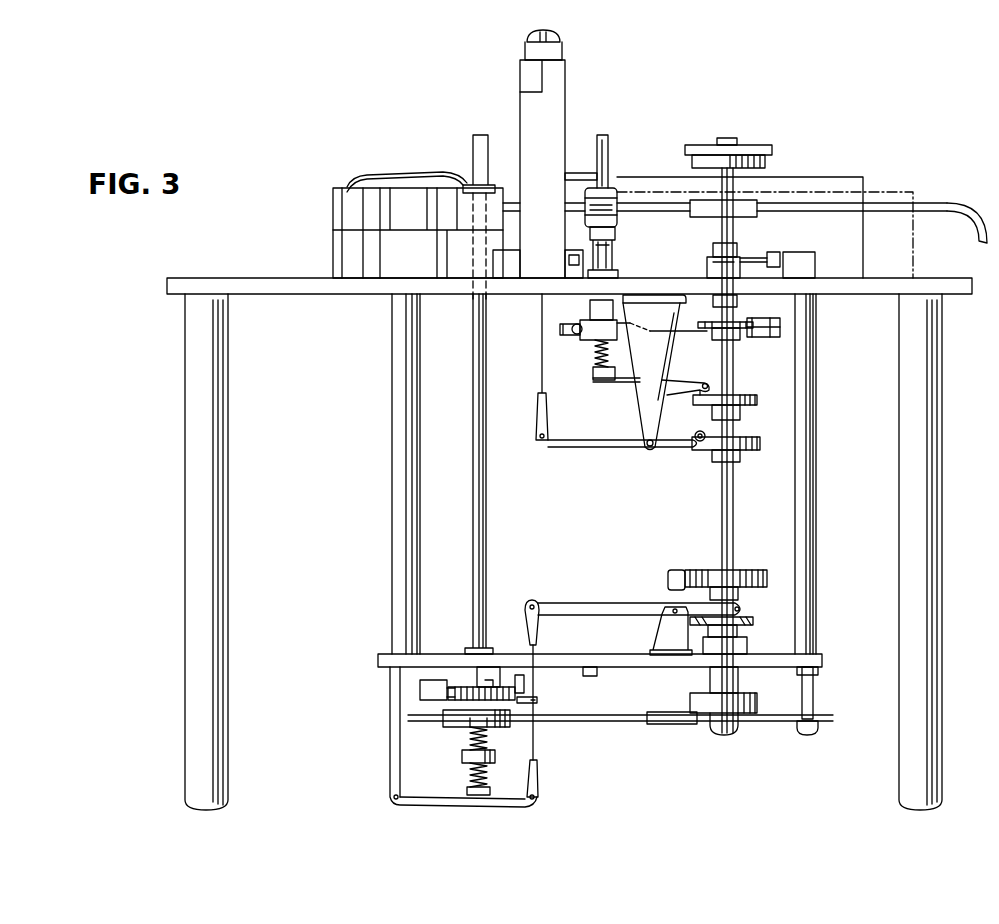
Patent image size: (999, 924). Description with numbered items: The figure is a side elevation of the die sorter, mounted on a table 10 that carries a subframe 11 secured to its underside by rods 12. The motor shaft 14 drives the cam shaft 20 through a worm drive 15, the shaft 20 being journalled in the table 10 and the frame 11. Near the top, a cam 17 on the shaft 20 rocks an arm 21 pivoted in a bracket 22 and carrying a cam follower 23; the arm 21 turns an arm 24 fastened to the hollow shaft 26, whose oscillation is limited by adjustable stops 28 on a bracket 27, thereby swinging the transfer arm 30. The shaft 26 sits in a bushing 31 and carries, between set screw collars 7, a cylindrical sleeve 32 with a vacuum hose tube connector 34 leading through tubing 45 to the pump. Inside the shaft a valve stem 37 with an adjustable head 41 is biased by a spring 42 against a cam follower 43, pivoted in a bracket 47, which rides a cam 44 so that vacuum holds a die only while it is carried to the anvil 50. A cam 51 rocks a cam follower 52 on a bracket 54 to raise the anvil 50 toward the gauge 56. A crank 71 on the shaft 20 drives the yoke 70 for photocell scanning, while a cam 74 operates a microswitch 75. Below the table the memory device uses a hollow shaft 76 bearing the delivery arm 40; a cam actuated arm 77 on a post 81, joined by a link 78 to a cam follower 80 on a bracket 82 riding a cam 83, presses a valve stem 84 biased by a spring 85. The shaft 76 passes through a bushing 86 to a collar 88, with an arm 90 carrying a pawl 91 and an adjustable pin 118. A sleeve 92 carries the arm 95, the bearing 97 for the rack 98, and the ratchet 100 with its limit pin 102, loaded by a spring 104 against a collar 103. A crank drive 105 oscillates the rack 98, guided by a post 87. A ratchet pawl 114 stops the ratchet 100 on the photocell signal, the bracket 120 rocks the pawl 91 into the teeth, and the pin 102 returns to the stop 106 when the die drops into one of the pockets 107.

The set screw collars 7 is at (615, 198).
The table 10 is at (245, 287).
The subframe 11 is at (815, 658).
The rods 12 is at (392, 478).
The shaft 14 is at (677, 572).
The worm drive 15 is at (745, 565).
The cam 17 is at (740, 330).
The cam shaft 20 is at (722, 509).
The arm 21 is at (700, 333).
The bracket 22 is at (763, 338).
The cam follower 23 is at (745, 320).
The arm 24 is at (563, 328).
The hollow shaft 26 is at (605, 175).
The bracket 27 is at (590, 310).
The adjustable stops 28 is at (575, 334).
The transfer arm 30 is at (574, 173).
The bushing 31 is at (612, 262).
The cylindrical sleeve 32 is at (612, 210).
The vacuum hose tube connector 34 is at (677, 210).
The valve stem 37 is at (597, 356).
The delivery arm 40 is at (420, 183).
The adjustable head 41 is at (595, 374).
The spring 42 is at (614, 382).
The cam follower 43 is at (686, 393).
The cam 44 is at (740, 398).
The tubing 45 is at (958, 207).
The bracket 47 is at (671, 365).
The anvil 50 is at (542, 380).
The cam 51 is at (698, 452).
The cam follower 52 is at (612, 446).
The bracket 54 is at (642, 405).
The gauge 56 is at (552, 136).
The yoke 70 is at (705, 150).
The crank 71 is at (765, 163).
The cam 74 is at (752, 260).
The microswitch 75 is at (800, 266).
The hollow shaft 76 is at (487, 490).
The cam actuated arm 77 is at (440, 800).
The link 78 is at (538, 765).
The cam follower 80 is at (576, 604).
The post 81 is at (390, 753).
The bracket 82 is at (668, 612).
The cam 83 is at (745, 620).
The valve stem 84 is at (470, 775).
The spring 85 is at (488, 790).
The bushing 86 is at (490, 650).
The post 87 is at (814, 708).
The collar 88 is at (495, 758).
The arm 90 is at (494, 668).
The pawl 91 is at (525, 692).
The sleeve 92 is at (468, 733).
The arm 95 is at (537, 701).
The bearing 97 is at (506, 728).
The rack 98 is at (665, 725).
The ratchet 100 is at (447, 698).
The limit pin 102 is at (470, 686).
The collar 103 is at (466, 755).
The spring 104 is at (470, 742).
The crank drive 105 is at (737, 720).
The stop 106 is at (597, 675).
The pockets 107 is at (352, 243).
The ratchet pawl 114 is at (420, 688).
The adjustable pin 118 is at (535, 725).
The bracket 120 is at (545, 668).